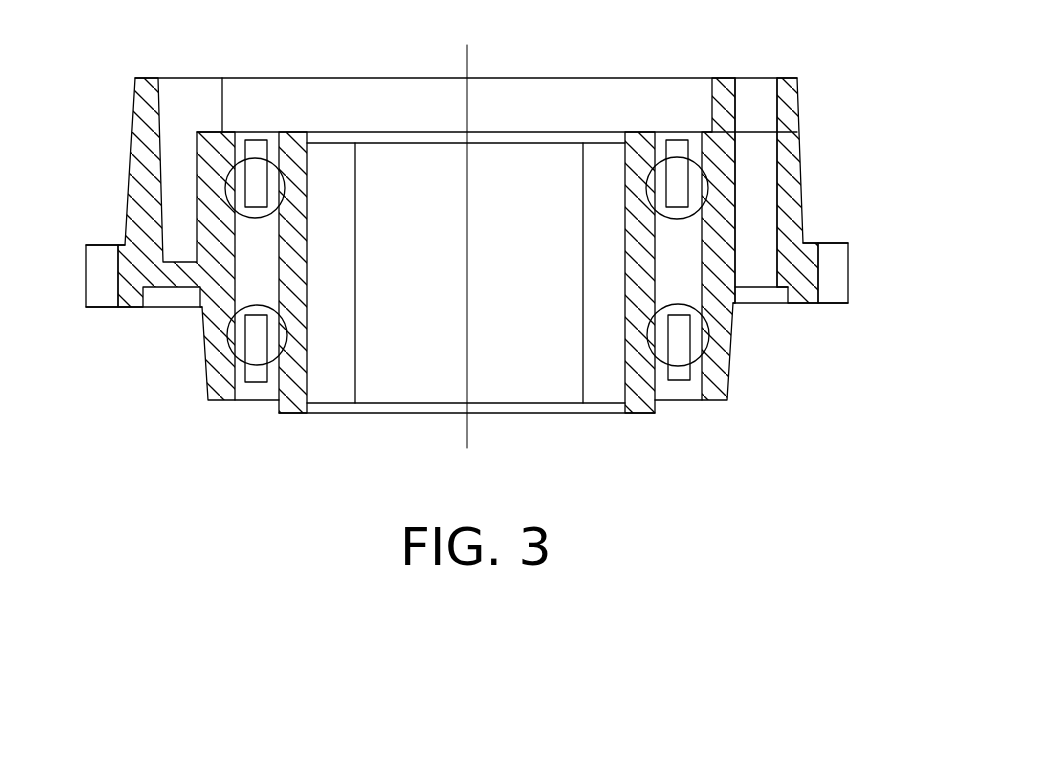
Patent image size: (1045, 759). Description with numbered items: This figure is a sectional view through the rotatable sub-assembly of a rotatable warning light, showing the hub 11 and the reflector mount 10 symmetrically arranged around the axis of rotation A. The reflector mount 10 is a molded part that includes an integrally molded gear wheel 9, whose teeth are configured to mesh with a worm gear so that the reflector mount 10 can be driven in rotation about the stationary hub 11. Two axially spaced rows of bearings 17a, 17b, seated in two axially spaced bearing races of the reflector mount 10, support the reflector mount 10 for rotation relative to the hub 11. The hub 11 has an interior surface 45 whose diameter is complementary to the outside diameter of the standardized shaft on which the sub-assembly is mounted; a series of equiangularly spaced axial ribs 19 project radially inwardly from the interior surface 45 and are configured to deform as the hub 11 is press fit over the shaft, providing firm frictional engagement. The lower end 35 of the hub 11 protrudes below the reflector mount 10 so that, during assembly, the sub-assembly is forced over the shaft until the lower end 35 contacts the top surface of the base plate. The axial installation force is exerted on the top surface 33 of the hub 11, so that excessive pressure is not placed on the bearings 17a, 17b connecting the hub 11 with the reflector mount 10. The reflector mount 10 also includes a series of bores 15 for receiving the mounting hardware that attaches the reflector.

The reflector mount 10 is at (145, 78).
The gear wheel 9 is at (848, 278).
The hub 11 is at (286, 413).
The bores 15 is at (752, 90).
The bearings 17a is at (272, 188).
The bearings 17b is at (697, 340).
The ribs 19 is at (590, 372).
The top surface of the hub 33 is at (377, 132).
The lower end of the hub 35 is at (525, 415).
The interior surface of the hub 45 is at (612, 165).
The axis of rotation A is at (467, 234).